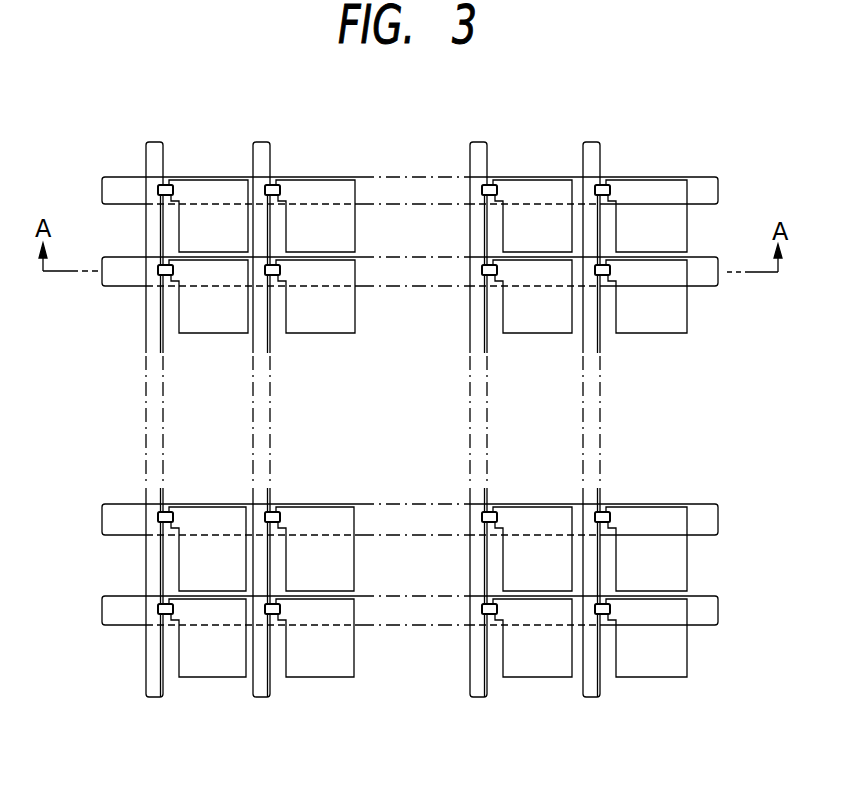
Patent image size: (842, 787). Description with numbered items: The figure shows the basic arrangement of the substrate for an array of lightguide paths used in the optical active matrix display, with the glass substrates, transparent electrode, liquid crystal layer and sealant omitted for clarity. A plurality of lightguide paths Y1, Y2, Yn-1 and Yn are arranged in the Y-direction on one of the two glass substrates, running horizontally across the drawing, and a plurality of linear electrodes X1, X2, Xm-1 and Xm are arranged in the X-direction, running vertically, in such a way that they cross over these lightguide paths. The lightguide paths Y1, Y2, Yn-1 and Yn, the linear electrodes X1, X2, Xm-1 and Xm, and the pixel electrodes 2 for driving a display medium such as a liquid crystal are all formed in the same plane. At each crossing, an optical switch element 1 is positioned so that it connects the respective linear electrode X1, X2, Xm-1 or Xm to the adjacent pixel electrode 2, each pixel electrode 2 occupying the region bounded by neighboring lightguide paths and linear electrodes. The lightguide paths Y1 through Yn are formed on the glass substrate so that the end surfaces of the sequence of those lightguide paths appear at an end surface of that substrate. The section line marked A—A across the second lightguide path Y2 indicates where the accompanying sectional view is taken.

The optical switch element 1 is at (171, 184).
The pixel electrode 2 is at (228, 181).
The linear electrode X1 is at (153, 142).
The linear electrode X2 is at (262, 142).
The linear electrode Xm-1 is at (478, 142).
The linear electrode Xm is at (590, 142).
The lightguide path Y1 is at (101, 188).
The lightguide path Y2 is at (107, 275).
The lightguide path Yn-1 is at (108, 522).
The lightguide path Yn is at (108, 611).